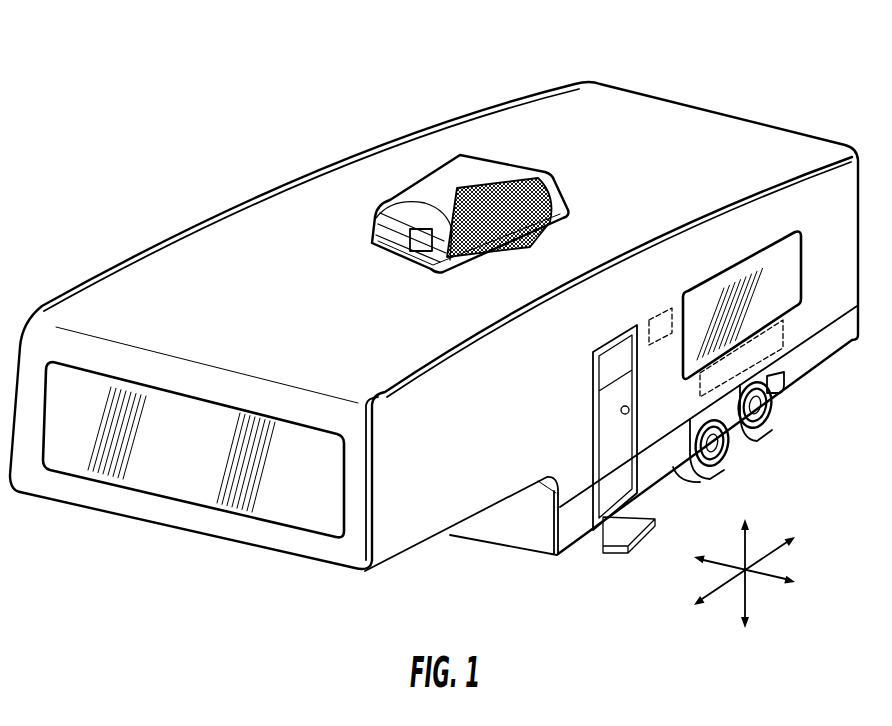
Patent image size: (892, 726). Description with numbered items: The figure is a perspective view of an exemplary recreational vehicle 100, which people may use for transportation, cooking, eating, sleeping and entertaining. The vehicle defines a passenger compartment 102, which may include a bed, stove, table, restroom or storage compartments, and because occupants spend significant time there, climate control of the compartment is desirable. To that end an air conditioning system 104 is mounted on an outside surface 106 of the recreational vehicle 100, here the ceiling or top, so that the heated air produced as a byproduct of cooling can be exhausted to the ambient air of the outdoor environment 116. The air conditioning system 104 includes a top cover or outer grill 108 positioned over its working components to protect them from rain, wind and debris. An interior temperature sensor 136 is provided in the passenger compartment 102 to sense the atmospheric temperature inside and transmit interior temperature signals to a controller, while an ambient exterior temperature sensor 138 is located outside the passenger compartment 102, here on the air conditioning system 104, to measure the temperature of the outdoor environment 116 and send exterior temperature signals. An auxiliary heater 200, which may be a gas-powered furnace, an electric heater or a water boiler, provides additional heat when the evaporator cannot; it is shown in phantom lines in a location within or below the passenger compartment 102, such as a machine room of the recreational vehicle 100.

The recreational vehicle 100 is at (150, 126).
The passenger compartment 102 is at (621, 147).
The air conditioning system 104 is at (500, 178).
The outside surface 106 is at (727, 137).
The outer grill 108 is at (461, 153).
The outdoor environment 116 is at (311, 117).
The interior temperature sensor 136 is at (660, 310).
The ambient exterior temperature sensor 138 is at (410, 248).
The auxiliary heater 200 is at (787, 330).